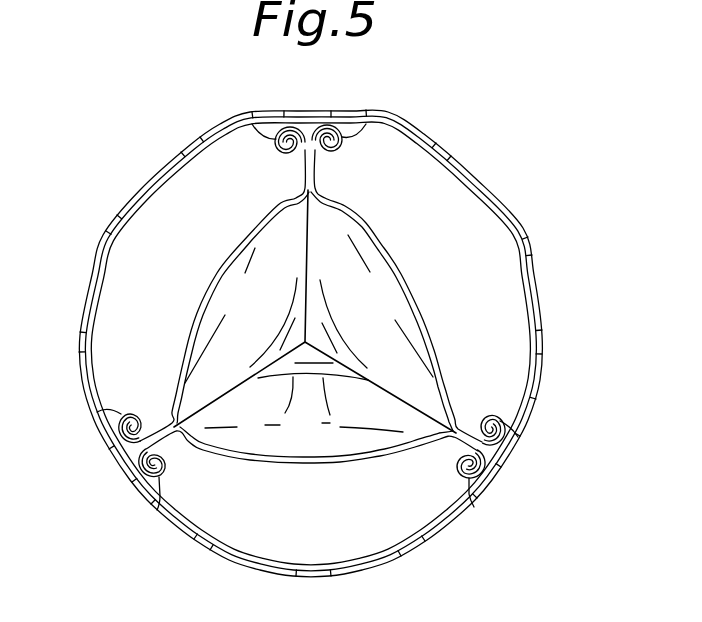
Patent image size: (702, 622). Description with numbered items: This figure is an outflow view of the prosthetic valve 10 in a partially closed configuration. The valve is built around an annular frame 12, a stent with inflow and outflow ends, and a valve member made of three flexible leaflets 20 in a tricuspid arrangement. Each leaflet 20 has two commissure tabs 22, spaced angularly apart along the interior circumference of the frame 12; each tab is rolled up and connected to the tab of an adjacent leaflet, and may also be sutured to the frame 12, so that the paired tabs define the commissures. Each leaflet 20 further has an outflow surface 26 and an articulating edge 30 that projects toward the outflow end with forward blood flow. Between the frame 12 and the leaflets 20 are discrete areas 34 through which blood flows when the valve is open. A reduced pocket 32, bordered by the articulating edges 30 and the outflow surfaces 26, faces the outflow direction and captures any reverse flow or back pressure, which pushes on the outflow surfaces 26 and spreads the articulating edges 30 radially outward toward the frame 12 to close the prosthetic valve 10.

The prosthetic valve 10 is at (150, 138).
The frame 12 is at (518, 223).
The leaflets 20 is at (268, 228).
The commissure tabs 22 is at (252, 118).
The outflow surface 26 is at (268, 326).
The articulating edge 30 is at (215, 280).
The pocket 32 is at (405, 362).
The discrete areas 34 is at (160, 326).